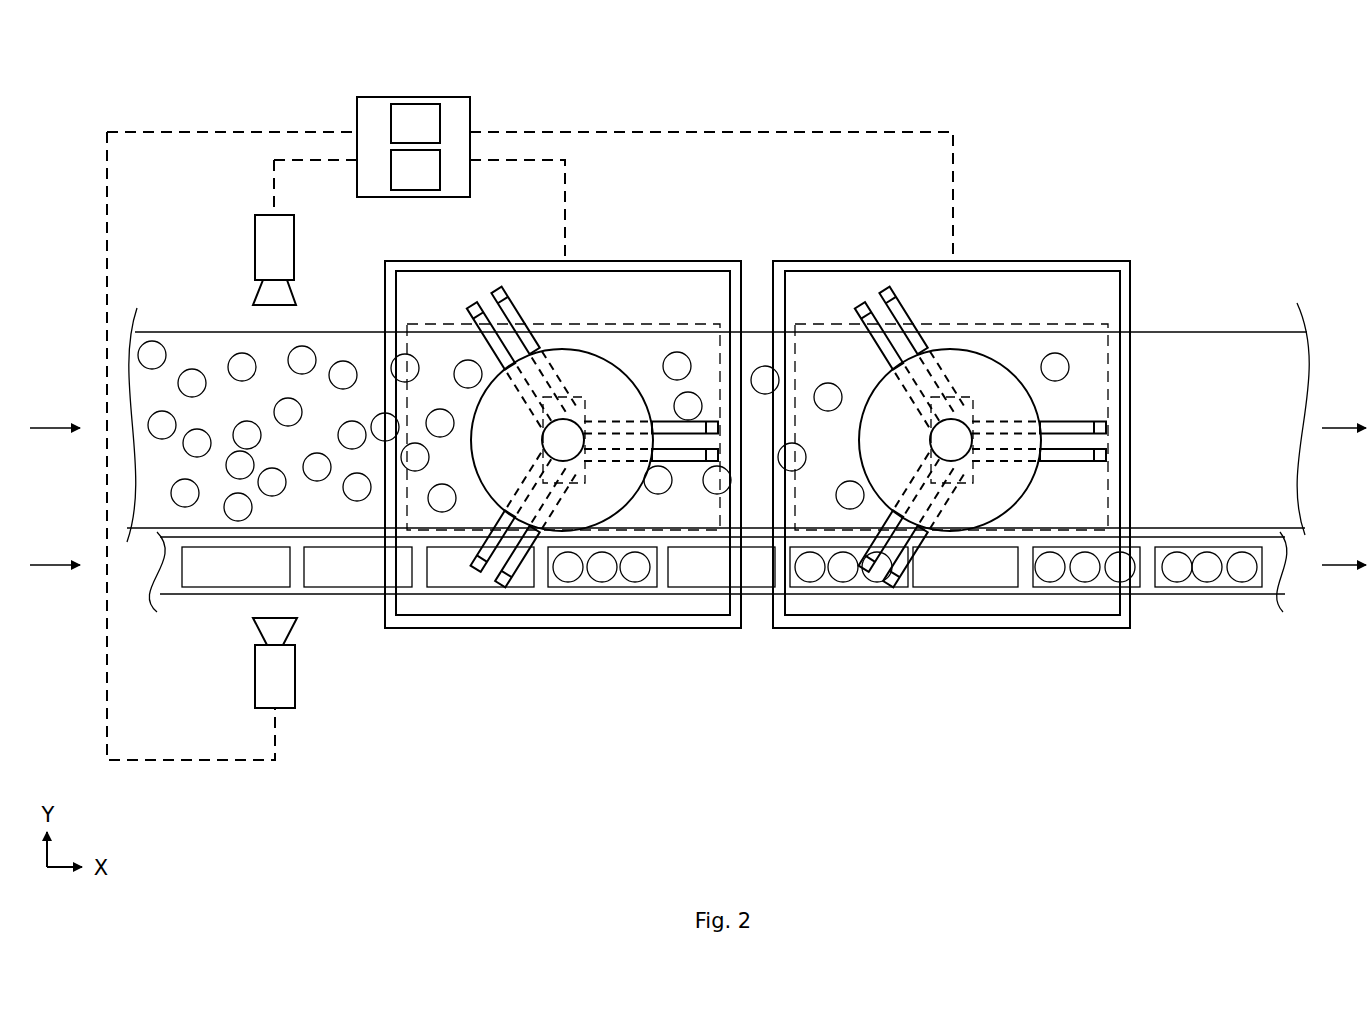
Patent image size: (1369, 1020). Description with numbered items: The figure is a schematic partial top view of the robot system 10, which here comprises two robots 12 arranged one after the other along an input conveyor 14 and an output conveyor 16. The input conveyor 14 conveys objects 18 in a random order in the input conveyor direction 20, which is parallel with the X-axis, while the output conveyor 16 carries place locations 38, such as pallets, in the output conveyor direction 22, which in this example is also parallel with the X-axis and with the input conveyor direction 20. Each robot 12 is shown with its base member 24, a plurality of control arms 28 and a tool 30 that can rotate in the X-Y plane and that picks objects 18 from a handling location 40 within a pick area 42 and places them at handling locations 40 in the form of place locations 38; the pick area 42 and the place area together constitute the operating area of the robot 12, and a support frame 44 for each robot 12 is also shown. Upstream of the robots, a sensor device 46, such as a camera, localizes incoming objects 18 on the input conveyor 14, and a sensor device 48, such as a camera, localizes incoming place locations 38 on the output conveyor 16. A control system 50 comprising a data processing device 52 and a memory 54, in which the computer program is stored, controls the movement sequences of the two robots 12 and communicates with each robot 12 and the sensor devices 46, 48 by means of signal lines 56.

The robot system 10 is at (146, 80).
The robot 12 is at (563, 674).
The input conveyor 14 is at (1220, 345).
The output conveyor 16 is at (1252, 547).
The object 18 is at (192, 383).
The input conveyor direction 20 is at (43, 422).
The output conveyor direction 22 is at (43, 560).
The base member 24 is at (488, 453).
The control arm 28 is at (470, 301).
The tool 30 is at (583, 397).
The place location 38 is at (224, 579).
The handling location 40 is at (192, 383).
The pick area 42 is at (576, 323).
The support frame 44 is at (705, 262).
The sensor device 46 is at (263, 260).
The sensor device 48 is at (263, 689).
The control system 50 is at (456, 97).
The data processing device 52 is at (403, 136).
The memory 54 is at (403, 183).
The signal line 56 is at (237, 132).